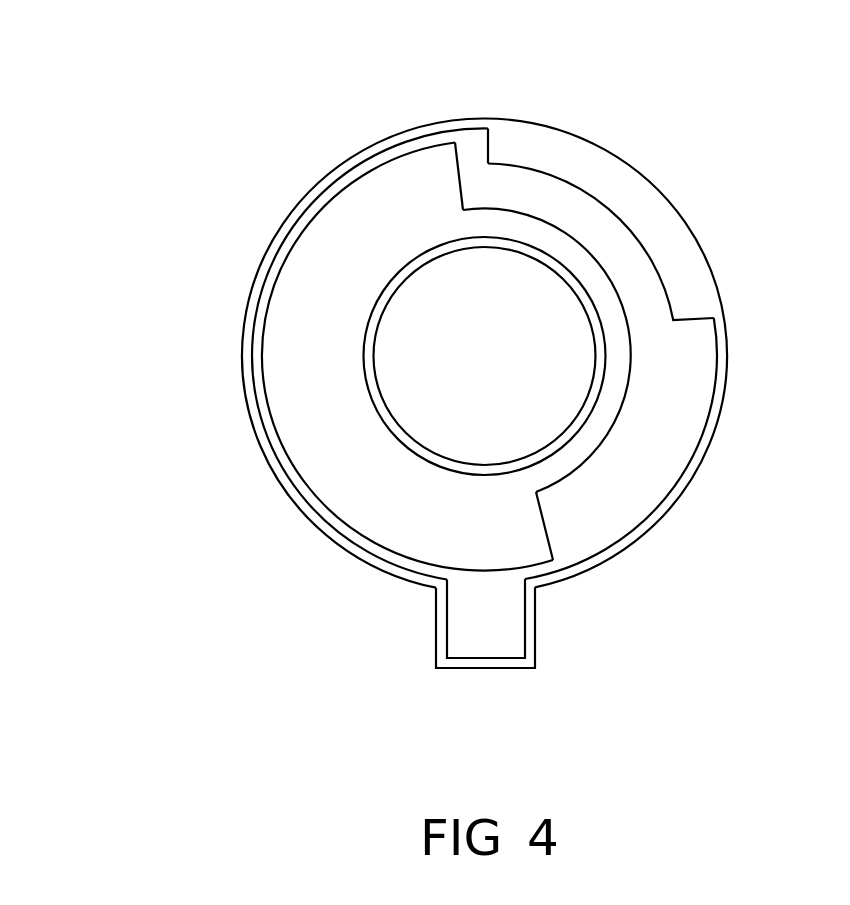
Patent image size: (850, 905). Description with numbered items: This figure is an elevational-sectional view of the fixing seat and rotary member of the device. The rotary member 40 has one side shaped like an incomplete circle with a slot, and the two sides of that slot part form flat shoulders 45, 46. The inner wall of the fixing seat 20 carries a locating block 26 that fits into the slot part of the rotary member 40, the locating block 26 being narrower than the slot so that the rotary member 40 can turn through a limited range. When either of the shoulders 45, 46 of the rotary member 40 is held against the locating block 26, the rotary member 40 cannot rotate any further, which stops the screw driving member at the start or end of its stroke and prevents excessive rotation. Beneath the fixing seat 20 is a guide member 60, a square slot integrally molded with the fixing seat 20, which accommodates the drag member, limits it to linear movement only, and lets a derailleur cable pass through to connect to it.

The fixing seat 20 is at (352, 158).
The locating block 26 is at (637, 200).
The rotary member 40 is at (320, 328).
The flat shoulder 45 is at (460, 175).
The flat shoulder 46 is at (547, 536).
The guide member 60 is at (487, 635).